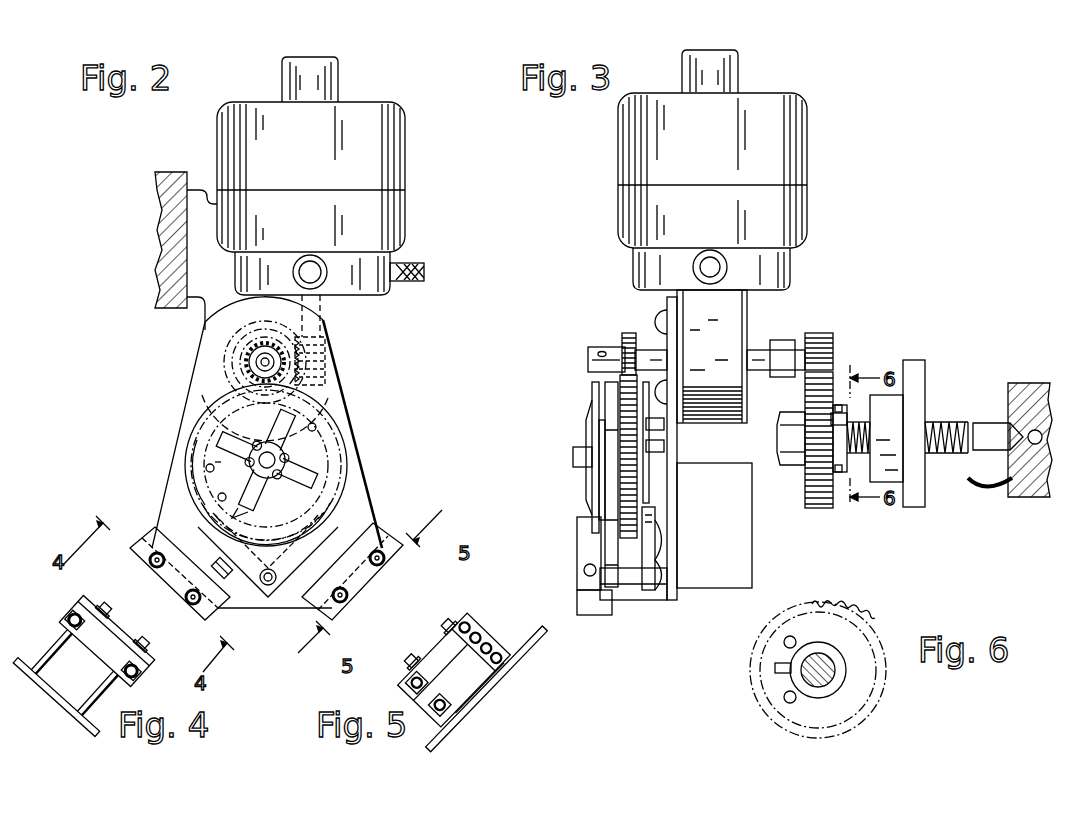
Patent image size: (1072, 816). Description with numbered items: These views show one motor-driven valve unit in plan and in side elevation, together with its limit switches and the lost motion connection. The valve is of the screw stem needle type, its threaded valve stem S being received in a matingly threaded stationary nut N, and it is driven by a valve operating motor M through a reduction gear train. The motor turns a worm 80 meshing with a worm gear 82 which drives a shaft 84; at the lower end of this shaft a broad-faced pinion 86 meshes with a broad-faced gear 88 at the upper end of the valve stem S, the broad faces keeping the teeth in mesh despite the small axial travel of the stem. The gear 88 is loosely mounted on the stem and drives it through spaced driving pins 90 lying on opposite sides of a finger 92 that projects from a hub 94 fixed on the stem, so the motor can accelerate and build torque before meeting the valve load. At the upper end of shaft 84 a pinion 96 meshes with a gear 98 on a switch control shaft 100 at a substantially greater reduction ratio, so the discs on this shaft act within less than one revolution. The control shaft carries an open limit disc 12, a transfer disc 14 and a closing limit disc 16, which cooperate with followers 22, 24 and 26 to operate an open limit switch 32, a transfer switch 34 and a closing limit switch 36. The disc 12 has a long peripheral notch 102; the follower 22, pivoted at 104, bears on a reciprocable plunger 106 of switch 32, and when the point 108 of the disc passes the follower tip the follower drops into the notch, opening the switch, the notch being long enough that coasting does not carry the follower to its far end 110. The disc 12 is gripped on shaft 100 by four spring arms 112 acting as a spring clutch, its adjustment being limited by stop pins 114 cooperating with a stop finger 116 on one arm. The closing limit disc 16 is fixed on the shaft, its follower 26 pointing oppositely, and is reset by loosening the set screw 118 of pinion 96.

In FIG. 2, the open limit disc 12 is at (340, 452).
In FIG. 3, the open limit disc 12 is at (592, 390).
In FIG. 3, the transfer disc 14 is at (598, 498).
In FIG. 3, the closing limit disc 16 is at (650, 497).
In FIG. 2, the follower 22 is at (258, 540).
In FIG. 3, the follower 22 is at (596, 536).
In FIG. 2, the follower 24 is at (330, 518).
In FIG. 3, the follower 24 is at (618, 600).
In FIG. 3, the follower 26 is at (656, 590).
In FIG. 2, the open limit switch 32 is at (180, 593).
In FIG. 4, the open limit switch 32 is at (122, 636).
In FIG. 3, the open limit switch 32 is at (585, 582).
In FIG. 5, the transfer switch 34 is at (445, 645).
In FIG. 5, the closing limit switch 36 is at (478, 690).
In FIG. 2, the worm 80 is at (328, 365).
In FIG. 3, the worm 80 is at (712, 356).
In FIG. 2, the worm gear 82 is at (330, 325).
In FIG. 2, the shaft 84 is at (258, 360).
In FIG. 3, the shaft 84 is at (587, 360).
In FIG. 3, the pinion 86 is at (819, 333).
In FIG. 3, the gear 88 is at (808, 505).
In FIG. 6, the gear 88 is at (848, 614).
In FIG. 3, the driving pins 90 is at (840, 406).
In FIG. 6, the driving pins 90 is at (785, 638).
In FIG. 3, the finger 92 is at (860, 436).
In FIG. 6, the finger 92 is at (775, 668).
In FIG. 3, the hub 94 is at (846, 418).
In FIG. 6, the hub 94 is at (845, 675).
In FIG. 2, the pinion 96 is at (250, 375).
In FIG. 3, the pinion 96 is at (629, 333).
In FIG. 2, the gear 98 is at (232, 392).
In FIG. 3, the gear 98 is at (628, 540).
In FIG. 2, the switch control shaft 100 is at (275, 455).
In FIG. 3, the switch control shaft 100 is at (573, 457).
In FIG. 2, the peripheral notch 102 is at (262, 505).
In FIG. 2, the pivot 104 is at (272, 585).
In FIG. 2, the reciprocable plunger 106 is at (232, 575).
In FIG. 2, the point of disc 108 is at (300, 512).
In FIG. 2, the far end of notch 110 is at (195, 453).
In FIG. 2, the spring arms 112 is at (318, 478).
In FIG. 3, the spring arms 112 is at (590, 417).
In FIG. 2, the stop pins 114 is at (316, 423).
In FIG. 2, the stop finger 116 is at (252, 497).
In FIG. 3, the set screw 118 is at (600, 351).
In FIG. 2, the valve operating motor M is at (403, 160).
In FIG. 3, the valve operating motor M is at (807, 157).
In FIG. 3, the valve stem S is at (945, 420).
In FIG. 6, the valve stem S is at (830, 680).
In FIG. 3, the stationary nut N is at (895, 468).